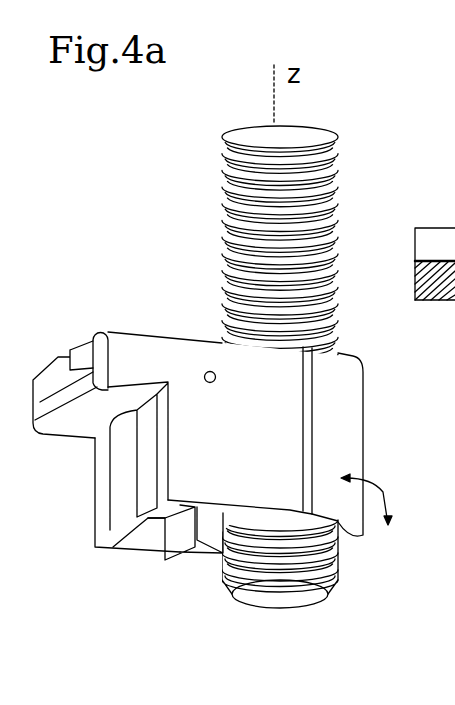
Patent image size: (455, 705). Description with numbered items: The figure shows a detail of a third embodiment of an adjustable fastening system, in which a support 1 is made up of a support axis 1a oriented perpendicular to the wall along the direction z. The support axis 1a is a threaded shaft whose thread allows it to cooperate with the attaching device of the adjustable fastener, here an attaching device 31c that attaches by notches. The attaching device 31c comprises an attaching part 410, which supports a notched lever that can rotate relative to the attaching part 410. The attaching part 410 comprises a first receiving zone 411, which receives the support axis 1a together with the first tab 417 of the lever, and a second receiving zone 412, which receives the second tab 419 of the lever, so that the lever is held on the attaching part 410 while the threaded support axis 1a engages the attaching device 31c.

The support 1 is at (362, 58).
The support axis 1a is at (340, 167).
The attaching part 410 is at (160, 343).
The second tab 419 is at (45, 327).
The second receiving zone 412 is at (36, 392).
The first receiving zone 411 is at (140, 542).
The first tab 417 is at (166, 556).
The attaching device 31c is at (395, 425).